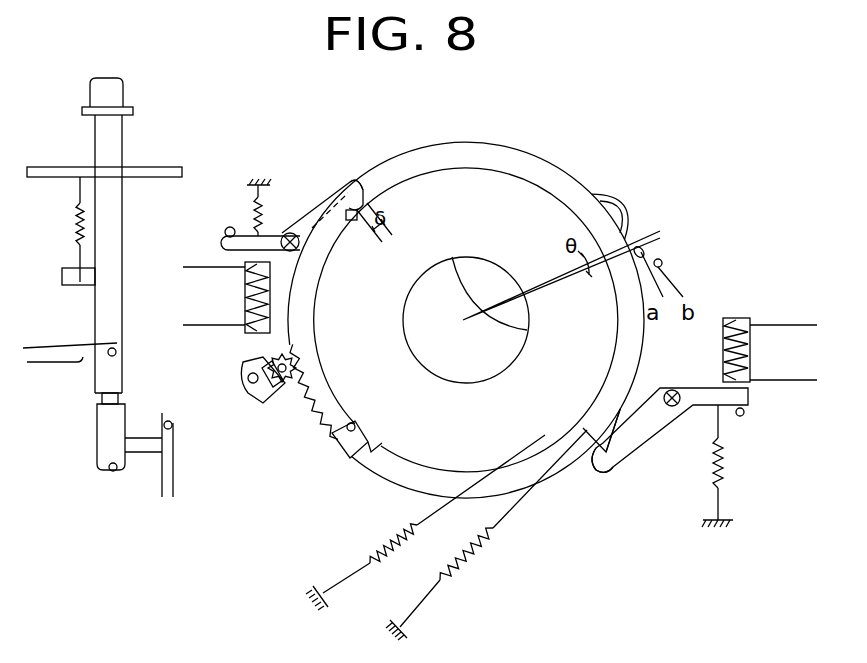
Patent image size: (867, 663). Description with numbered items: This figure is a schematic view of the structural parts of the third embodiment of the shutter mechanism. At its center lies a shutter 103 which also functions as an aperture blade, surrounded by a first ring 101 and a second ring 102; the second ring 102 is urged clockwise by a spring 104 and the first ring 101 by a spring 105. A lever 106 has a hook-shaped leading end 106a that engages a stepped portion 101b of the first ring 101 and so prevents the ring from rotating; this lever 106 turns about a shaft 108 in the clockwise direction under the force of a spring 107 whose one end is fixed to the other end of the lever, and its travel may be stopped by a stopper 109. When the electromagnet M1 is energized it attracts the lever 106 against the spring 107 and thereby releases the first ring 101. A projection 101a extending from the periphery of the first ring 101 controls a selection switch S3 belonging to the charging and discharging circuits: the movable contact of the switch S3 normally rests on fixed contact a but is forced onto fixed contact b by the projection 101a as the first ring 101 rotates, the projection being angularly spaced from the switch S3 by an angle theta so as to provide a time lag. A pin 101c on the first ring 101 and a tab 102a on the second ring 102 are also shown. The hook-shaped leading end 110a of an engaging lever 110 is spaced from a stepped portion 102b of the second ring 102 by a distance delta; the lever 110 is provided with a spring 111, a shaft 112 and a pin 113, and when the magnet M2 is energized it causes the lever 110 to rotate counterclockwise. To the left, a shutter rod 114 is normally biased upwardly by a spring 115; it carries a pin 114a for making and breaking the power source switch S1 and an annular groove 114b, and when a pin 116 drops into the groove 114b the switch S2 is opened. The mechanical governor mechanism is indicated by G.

The first ring 101 is at (506, 158).
The projection 101a is at (628, 205).
The stepped portion 101b is at (590, 463).
The pin of ring 101 101c is at (347, 428).
The second ring 102 is at (540, 195).
The tab of ring 102 102a is at (351, 455).
The stepped portion 102b is at (357, 214).
The shutter 103 is at (465, 265).
The spring 104 is at (483, 553).
The spring 105 is at (400, 538).
The lever 106 is at (637, 443).
The hook-shaped leading end 106a is at (600, 473).
The spring 107 is at (723, 455).
The shaft 108 is at (672, 392).
The stopper 109 is at (744, 412).
The engaging lever 110 is at (322, 213).
The hook-shaped leading end 110a is at (357, 178).
The spring 111 is at (255, 198).
The shaft 112 is at (290, 230).
The pin 113 is at (225, 230).
The shutter rod 114 is at (117, 130).
The pin 114a is at (116, 352).
The annular groove 114b is at (101, 398).
The spring 115 is at (78, 226).
The pin 116 is at (143, 452).
The power source switch S1 is at (70, 343).
The switch S2 is at (185, 455).
The selection switch S3 is at (662, 263).
The mechanical governor G is at (256, 392).
The electromagnet M1 is at (770, 350).
The magnet M2 is at (226, 297).